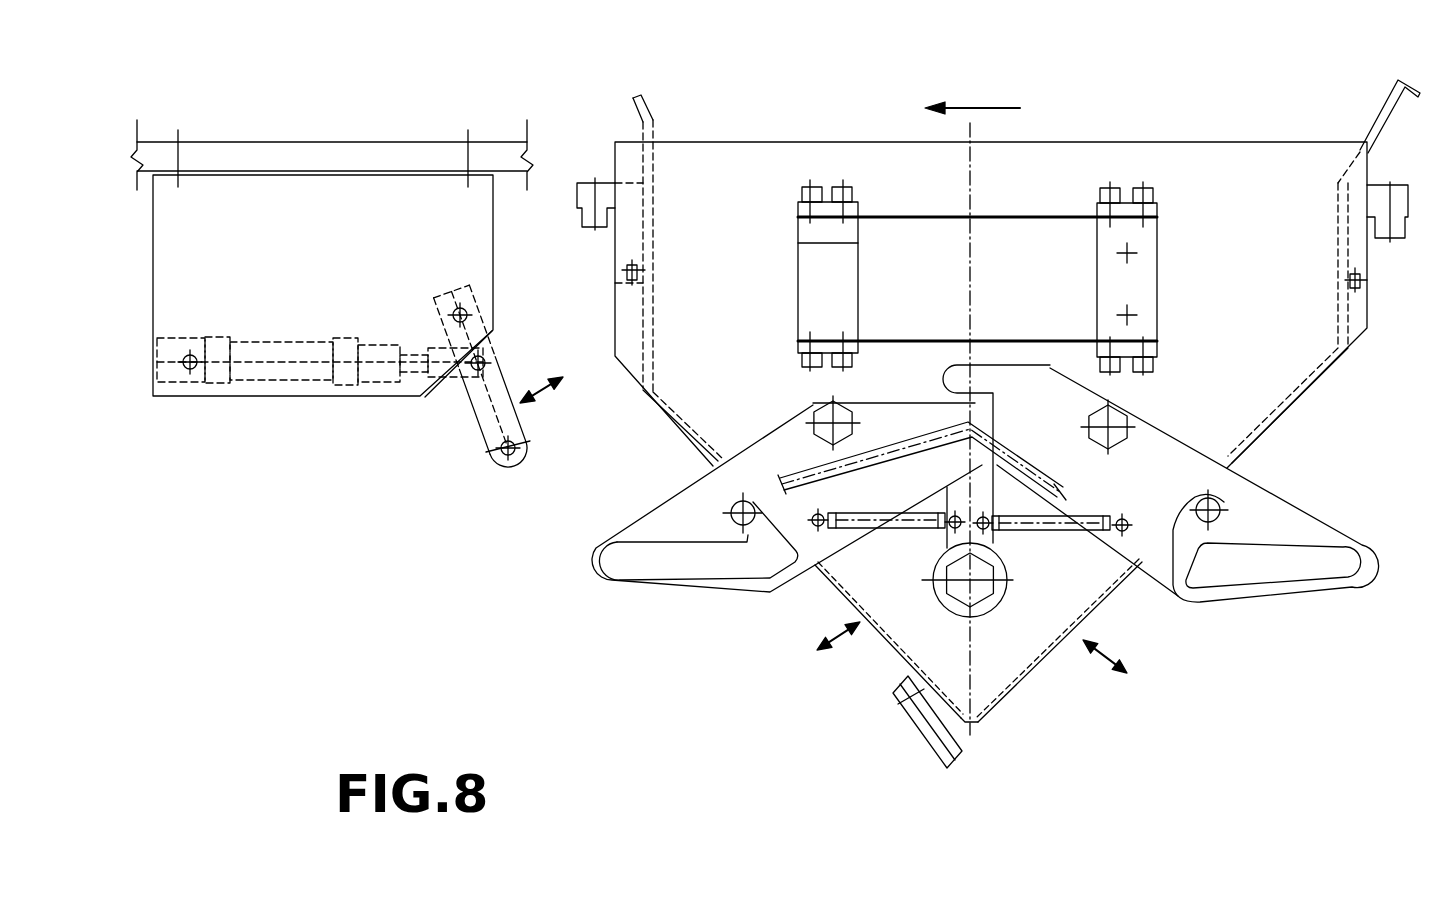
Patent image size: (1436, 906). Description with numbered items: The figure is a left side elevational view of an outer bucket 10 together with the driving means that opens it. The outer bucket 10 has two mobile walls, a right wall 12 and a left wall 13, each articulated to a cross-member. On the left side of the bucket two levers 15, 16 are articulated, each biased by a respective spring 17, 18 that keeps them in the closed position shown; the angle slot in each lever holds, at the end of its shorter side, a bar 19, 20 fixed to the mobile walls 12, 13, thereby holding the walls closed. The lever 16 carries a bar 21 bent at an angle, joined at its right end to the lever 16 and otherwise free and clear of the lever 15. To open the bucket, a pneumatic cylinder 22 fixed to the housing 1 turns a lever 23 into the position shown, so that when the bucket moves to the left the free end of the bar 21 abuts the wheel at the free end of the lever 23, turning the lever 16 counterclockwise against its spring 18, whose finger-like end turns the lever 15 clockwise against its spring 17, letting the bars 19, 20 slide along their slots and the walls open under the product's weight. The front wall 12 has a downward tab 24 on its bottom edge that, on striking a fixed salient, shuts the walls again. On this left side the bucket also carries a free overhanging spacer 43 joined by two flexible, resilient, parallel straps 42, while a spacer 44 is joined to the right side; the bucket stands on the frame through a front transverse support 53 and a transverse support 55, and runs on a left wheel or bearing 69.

The housing 1 is at (273, 156).
The pneumatic cylinder 22 is at (270, 372).
The lever 23 is at (480, 408).
The outer bucket 10 is at (1212, 160).
The right mobile wall 12 is at (678, 427).
The left mobile wall 13 is at (1292, 402).
The front transverse support 53 is at (590, 226).
The transverse support 55 is at (1395, 233).
The straps 42 is at (890, 220).
The spacer 43 is at (815, 282).
The spacer 44 is at (1145, 283).
The lever 15 is at (653, 520).
The lever 16 is at (1288, 512).
The spring 17 is at (903, 528).
The spring 18 is at (1060, 530).
The bar 19 is at (737, 518).
The bar 20 is at (1222, 502).
The bar 21 is at (1007, 445).
The tab 24 is at (943, 743).
The wheel or bearing 69 is at (985, 608).